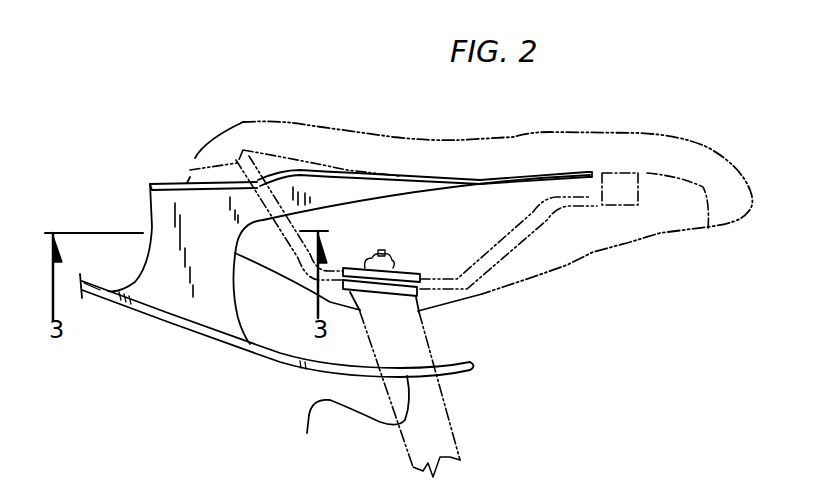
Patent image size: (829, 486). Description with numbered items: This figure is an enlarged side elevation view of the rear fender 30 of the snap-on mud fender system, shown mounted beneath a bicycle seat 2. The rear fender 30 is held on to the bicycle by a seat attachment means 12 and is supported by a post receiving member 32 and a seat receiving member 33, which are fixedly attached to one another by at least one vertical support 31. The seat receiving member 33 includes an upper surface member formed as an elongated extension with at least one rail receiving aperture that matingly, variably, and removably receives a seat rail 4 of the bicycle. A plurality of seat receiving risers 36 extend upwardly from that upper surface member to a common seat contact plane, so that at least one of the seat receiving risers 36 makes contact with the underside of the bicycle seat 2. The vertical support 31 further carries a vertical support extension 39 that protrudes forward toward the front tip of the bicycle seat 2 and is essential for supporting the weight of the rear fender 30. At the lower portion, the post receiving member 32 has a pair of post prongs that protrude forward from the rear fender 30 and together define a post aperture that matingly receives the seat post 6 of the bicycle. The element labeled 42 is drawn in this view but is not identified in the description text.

The bicycle seat 2 is at (543, 133).
The seat rail 4 is at (590, 200).
The seat post 6 is at (440, 430).
The seat attachment means 12 is at (462, 229).
The rear fender 30 is at (100, 307).
The vertical support 31 is at (173, 225).
The post receiving member 32 is at (213, 333).
The seat receiving member 33 is at (167, 183).
The seat receiving risers 36 is at (300, 170).
The vertical support extension 39 is at (423, 183).
The retaining wire 42 is at (307, 433).